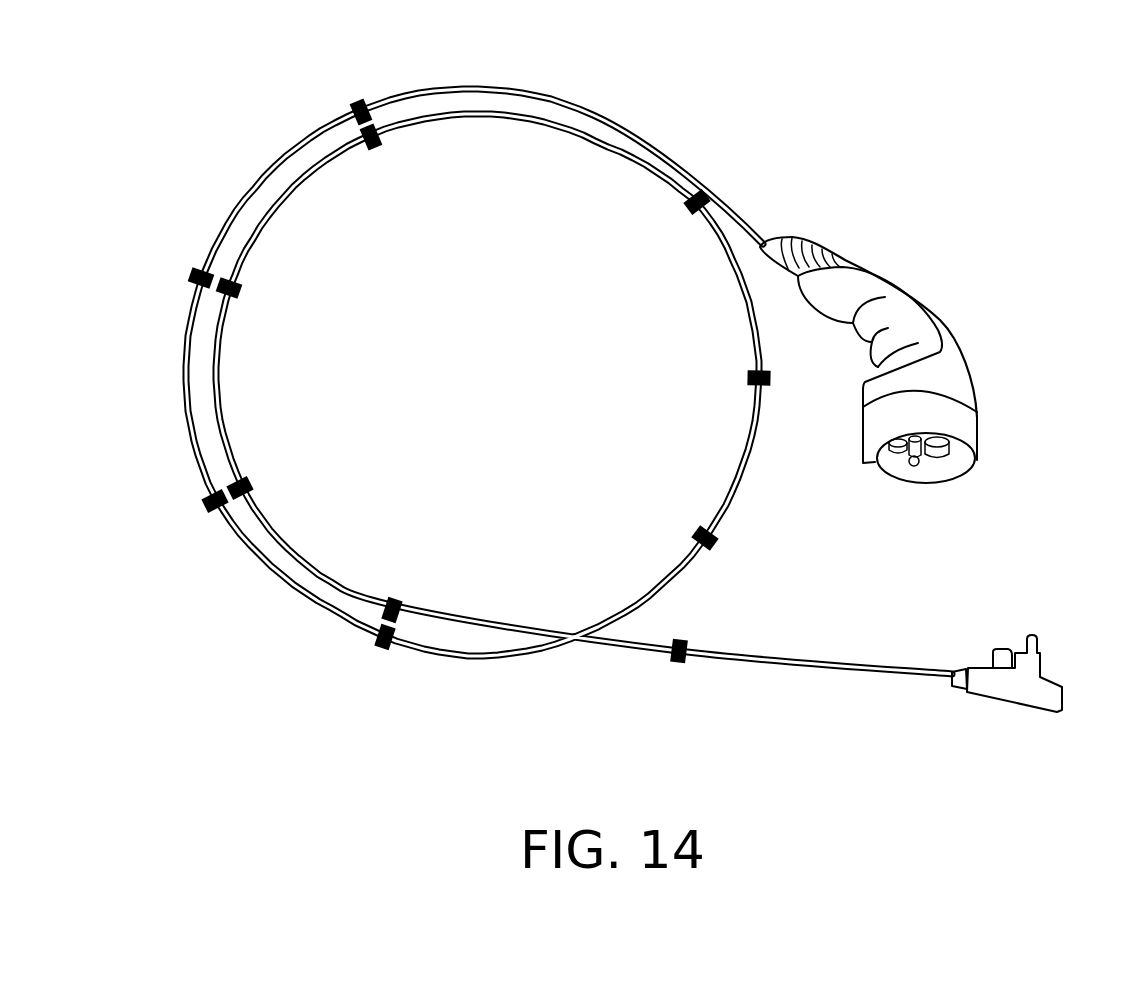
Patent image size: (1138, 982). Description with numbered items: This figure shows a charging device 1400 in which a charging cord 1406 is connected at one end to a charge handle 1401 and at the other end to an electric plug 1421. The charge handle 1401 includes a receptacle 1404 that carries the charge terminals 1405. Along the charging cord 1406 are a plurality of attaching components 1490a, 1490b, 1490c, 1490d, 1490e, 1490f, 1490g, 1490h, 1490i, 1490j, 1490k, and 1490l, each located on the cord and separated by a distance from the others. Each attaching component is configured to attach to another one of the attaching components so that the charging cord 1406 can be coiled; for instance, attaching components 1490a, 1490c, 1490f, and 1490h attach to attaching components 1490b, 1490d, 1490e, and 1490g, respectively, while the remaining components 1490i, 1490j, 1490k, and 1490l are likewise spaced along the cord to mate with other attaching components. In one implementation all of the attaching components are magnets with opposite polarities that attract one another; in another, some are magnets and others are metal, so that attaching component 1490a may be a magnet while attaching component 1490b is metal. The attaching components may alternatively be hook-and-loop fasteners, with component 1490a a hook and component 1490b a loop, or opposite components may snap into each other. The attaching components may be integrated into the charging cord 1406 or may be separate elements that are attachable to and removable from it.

The charging device 1400 is at (598, 419).
The charge handle 1401 is at (962, 388).
The receptacle 1404 is at (978, 430).
The charge terminals 1405 is at (917, 464).
The charging cord 1406 is at (867, 672).
The electric plug 1421 is at (1030, 697).
The attaching component 1490a is at (193, 276).
The attaching component 1490b is at (243, 288).
The attaching component 1490c is at (356, 104).
The attaching component 1490d is at (370, 147).
The attaching component 1490e is at (255, 485).
The attaching component 1490f is at (210, 503).
The attaching component 1490g is at (400, 598).
The attaching component 1490h is at (382, 648).
The attaching component 1490i is at (678, 667).
The attaching component 1490j is at (716, 549).
The attaching component 1490k is at (768, 388).
The attaching component 1490l is at (690, 208).